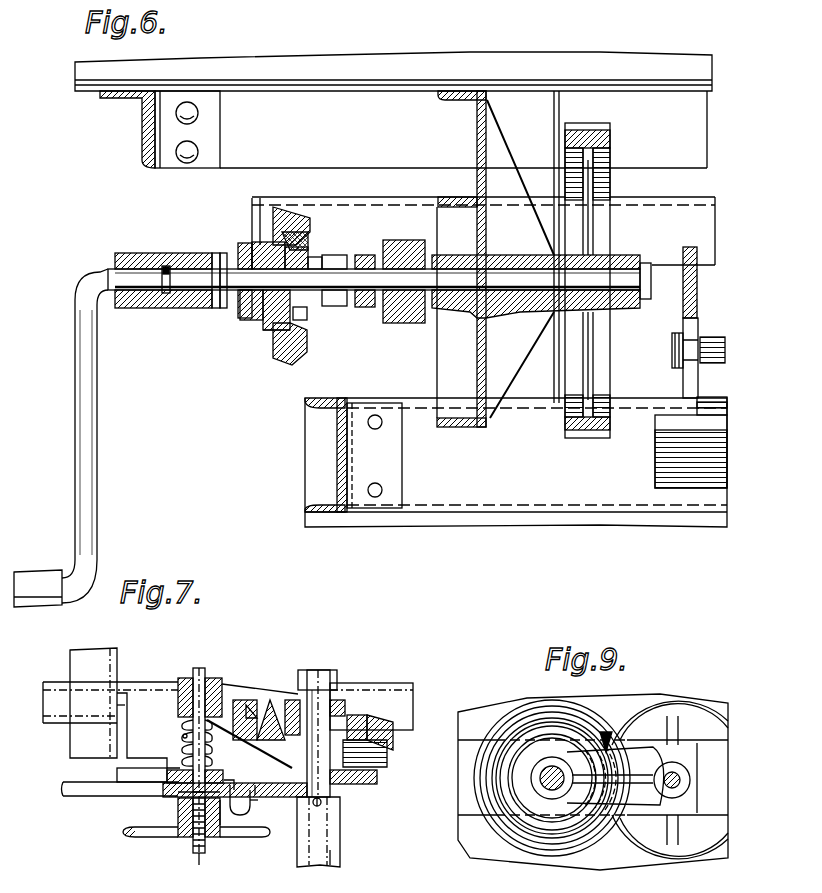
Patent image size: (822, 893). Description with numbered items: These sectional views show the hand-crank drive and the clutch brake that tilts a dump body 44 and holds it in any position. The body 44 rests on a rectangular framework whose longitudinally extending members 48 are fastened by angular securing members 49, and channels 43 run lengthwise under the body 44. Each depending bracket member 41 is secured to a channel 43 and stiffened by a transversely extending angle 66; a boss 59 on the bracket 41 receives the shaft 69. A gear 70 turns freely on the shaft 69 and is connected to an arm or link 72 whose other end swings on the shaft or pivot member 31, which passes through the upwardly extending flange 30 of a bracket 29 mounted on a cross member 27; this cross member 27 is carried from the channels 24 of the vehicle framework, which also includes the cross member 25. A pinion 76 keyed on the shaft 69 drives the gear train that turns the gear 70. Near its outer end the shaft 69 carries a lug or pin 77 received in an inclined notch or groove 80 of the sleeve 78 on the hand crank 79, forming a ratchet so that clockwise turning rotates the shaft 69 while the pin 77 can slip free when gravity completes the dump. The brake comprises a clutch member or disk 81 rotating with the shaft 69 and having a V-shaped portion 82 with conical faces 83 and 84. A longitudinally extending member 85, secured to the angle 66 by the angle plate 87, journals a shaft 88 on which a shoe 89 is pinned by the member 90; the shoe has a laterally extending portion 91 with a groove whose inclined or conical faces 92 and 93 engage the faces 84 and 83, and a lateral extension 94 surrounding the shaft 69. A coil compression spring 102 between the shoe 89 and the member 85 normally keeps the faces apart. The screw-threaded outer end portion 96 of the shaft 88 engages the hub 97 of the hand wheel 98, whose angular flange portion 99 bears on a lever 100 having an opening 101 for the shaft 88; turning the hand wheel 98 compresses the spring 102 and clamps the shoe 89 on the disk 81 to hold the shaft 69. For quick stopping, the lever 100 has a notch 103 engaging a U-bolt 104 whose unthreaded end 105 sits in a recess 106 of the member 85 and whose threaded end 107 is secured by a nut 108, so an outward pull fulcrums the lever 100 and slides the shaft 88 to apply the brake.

In FIG. 6, the channel 24 is at (340, 466).
In FIG. 7, the channel 24 is at (43, 692).
In FIG. 9, the channel 24 is at (458, 742).
In FIG. 6, the cross member 25 is at (585, 492).
In FIG. 6, the cross member 27 is at (727, 442).
In FIG. 6, the bracket 29 is at (722, 398).
In FIG. 6, the upwardly extending flange 30 is at (690, 358).
In FIG. 6, the shaft or pivot member 31 is at (715, 340).
In FIG. 6, the depending bracket member 41 is at (507, 352).
In FIG. 6, the channel 43 is at (477, 118).
In FIG. 6, the body 44 is at (366, 62).
In FIG. 6, the longitudinally extending member 48 is at (148, 101).
In FIG. 6, the angular securing member 49 is at (160, 142).
In FIG. 6, the boss 59 is at (502, 262).
In FIG. 7, the transversely extending angle 66 is at (70, 667).
In FIG. 6, the shaft 69 is at (172, 268).
In FIG. 7, the shaft 69 is at (317, 676).
In FIG. 9, the shaft 69 is at (553, 770).
In FIG. 6, the gear 70 is at (605, 131).
In FIG. 6, the arm or link 72 is at (697, 305).
In FIG. 6, the pinion 76 is at (394, 250).
In FIG. 6, the lug or pin 77 is at (215, 252).
In FIG. 7, the lug or pin 77 is at (335, 816).
In FIG. 6, the sleeve 78 is at (125, 253).
In FIG. 7, the sleeve 78 is at (336, 840).
In FIG. 6, the handle member or hand crank 79 is at (80, 290).
In FIG. 7, the handle member or hand crank 79 is at (338, 858).
In FIG. 6, the inclined notch or groove 80 is at (225, 253).
In FIG. 7, the inclined notch or groove 80 is at (321, 802).
In FIG. 6, the clutch member or disk 81 is at (272, 318).
In FIG. 7, the clutch member or disk 81 is at (358, 720).
In FIG. 9, the clutch member or disk 81 is at (532, 742).
In FIG. 6, the V-shaped portion 82 is at (276, 340).
In FIG. 6, the conical face 83 is at (310, 240).
In FIG. 7, the conical face 83 is at (266, 718).
In FIG. 9, the conical face 83 is at (500, 795).
In FIG. 6, the conical face 84 is at (258, 247).
In FIG. 7, the conical face 84 is at (246, 715).
In FIG. 9, the conical face 84 is at (497, 817).
In FIG. 6, the longitudinally extending member 85 is at (240, 312).
In FIG. 7, the longitudinally extending member 85 is at (377, 776).
In FIG. 9, the longitudinally extending member 85 is at (470, 766).
In FIG. 7, the angle plate 87 is at (122, 738).
In FIG. 7, the shaft 88 is at (190, 756).
In FIG. 9, the shaft 88 is at (676, 776).
In FIG. 7, the shoe 89 is at (201, 670).
In FIG. 7, the pin member 90 is at (180, 686).
In FIG. 7, the laterally extending portion 91 is at (262, 712).
In FIG. 9, the laterally extending portion 91 is at (612, 752).
In FIG. 7, the inclined or conical face 92 is at (246, 705).
In FIG. 7, the inclined or conical face 93 is at (277, 712).
In FIG. 7, the lateral extension 94 is at (338, 712).
In FIG. 7, the screw-threaded outer end portion 96 is at (186, 848).
In FIG. 7, the hub 97 is at (168, 830).
In FIG. 7, the hand wheel 98 is at (123, 832).
In FIG. 9, the hand wheel 98 is at (668, 712).
In FIG. 7, the angular flange portion 99 is at (190, 812).
In FIG. 7, the lever 100 is at (70, 786).
In FIG. 7, the opening 101 is at (150, 777).
In FIG. 7, the coil compression spring 102 is at (182, 739).
In FIG. 7, the notch 103 is at (242, 802).
In FIG. 7, the U-bolt 104 is at (222, 806).
In FIG. 7, the unthreaded end 105 is at (204, 842).
In FIG. 7, the recess 106 is at (228, 785).
In FIG. 7, the threaded end 107 is at (256, 808).
In FIG. 7, the nut or other securing means 108 is at (258, 790).